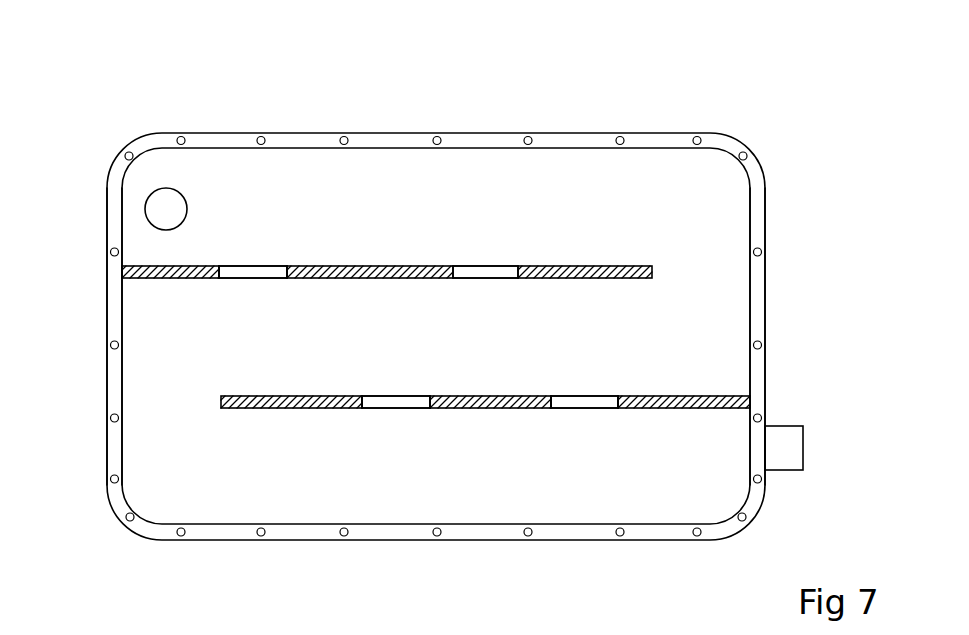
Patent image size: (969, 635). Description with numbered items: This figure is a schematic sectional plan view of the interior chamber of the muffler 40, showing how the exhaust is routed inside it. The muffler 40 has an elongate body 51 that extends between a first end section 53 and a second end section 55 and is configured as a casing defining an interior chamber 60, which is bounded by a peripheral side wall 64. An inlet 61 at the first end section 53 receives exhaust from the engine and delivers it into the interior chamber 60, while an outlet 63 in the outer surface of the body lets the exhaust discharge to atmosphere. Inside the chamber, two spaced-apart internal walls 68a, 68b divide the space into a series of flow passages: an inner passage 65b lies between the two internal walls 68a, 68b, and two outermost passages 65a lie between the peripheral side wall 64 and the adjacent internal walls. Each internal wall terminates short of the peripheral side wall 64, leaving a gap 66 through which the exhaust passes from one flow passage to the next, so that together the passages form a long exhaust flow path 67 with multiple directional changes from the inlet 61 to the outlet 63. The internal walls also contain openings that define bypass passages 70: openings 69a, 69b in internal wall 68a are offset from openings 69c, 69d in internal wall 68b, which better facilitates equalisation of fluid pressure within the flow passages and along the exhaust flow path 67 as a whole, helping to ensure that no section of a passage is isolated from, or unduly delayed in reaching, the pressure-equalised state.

The muffler 40 is at (143, 112).
The body 51 is at (118, 170).
The first end section 53 is at (766, 270).
The second end section 55 is at (112, 303).
The interior chamber 60 is at (718, 317).
The inlet 61 is at (780, 448).
The outlet 63 is at (160, 212).
The peripheral side wall 64 is at (393, 133).
The outermost passages 65a is at (558, 183).
The inner passage 65b is at (503, 270).
The gap 66 is at (177, 407).
The exhaust flow path 67 is at (162, 367).
The internal wall 68a is at (268, 408).
The internal wall 68b is at (343, 267).
The opening 69a is at (402, 408).
The opening 69b is at (592, 407).
The opening 69c is at (233, 268).
The opening 69d is at (478, 268).
The bypass passages 70 is at (272, 268).